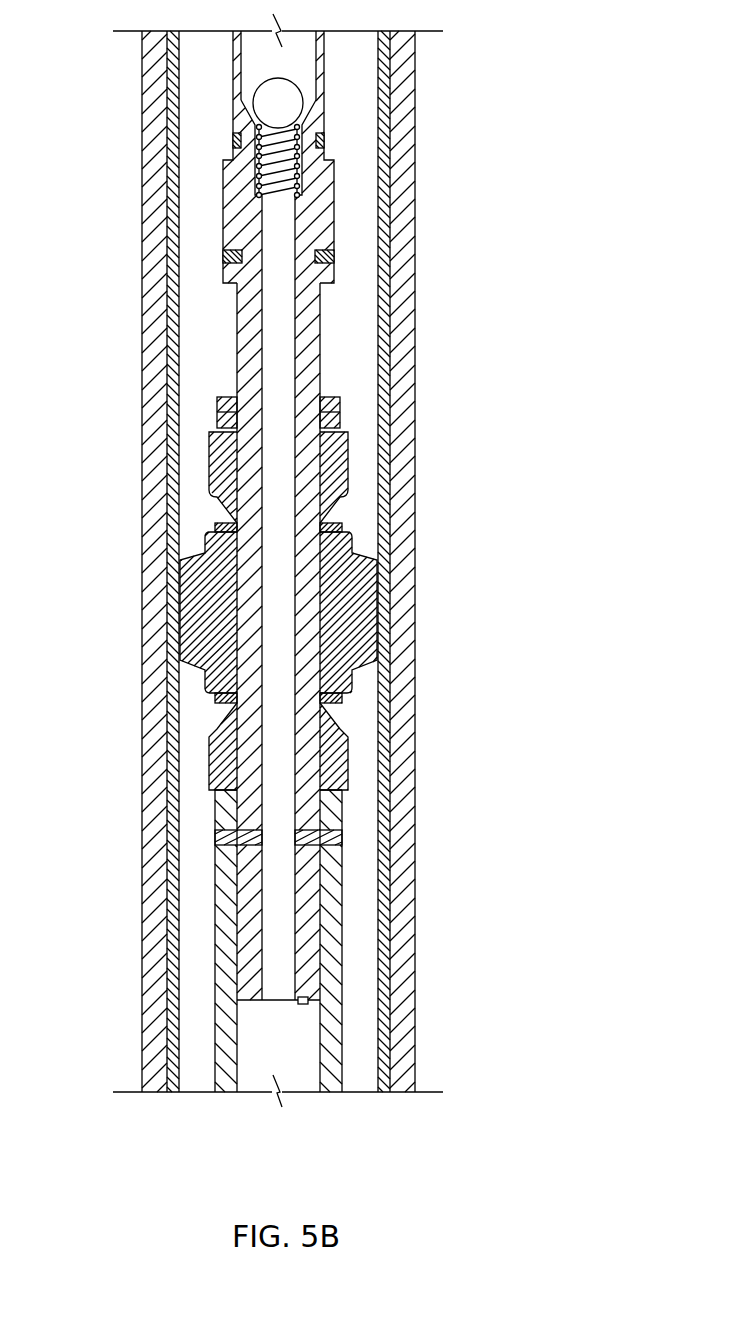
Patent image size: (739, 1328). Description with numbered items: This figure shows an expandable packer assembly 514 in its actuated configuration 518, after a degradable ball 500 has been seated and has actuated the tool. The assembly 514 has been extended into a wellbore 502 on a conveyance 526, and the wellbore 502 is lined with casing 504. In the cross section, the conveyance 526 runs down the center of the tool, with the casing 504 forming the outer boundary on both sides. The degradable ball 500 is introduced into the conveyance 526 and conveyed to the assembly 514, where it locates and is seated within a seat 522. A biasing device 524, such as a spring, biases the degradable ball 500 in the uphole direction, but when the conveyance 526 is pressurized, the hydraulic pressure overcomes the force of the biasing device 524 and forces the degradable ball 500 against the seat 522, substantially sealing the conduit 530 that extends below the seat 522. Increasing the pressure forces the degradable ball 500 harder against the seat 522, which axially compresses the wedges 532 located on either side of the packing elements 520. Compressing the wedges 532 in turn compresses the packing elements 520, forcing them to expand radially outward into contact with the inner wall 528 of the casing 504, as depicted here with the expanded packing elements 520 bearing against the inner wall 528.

The degradable ball 500 is at (262, 117).
The wellbore 502 is at (403, 230).
The casing 504 is at (383, 185).
The expandable packer assembly 514 is at (361, 593).
The actuated configuration 518 is at (361, 593).
The packing elements 520 is at (367, 608).
The seat 522 is at (303, 113).
The biasing device 524 is at (268, 173).
The conveyance 526 is at (322, 56).
The inner wall 528 is at (377, 1072).
The conduit 530 is at (240, 1001).
The wedges 532 is at (340, 509).